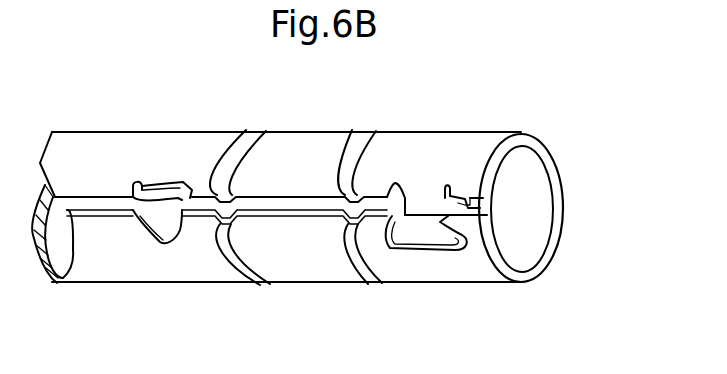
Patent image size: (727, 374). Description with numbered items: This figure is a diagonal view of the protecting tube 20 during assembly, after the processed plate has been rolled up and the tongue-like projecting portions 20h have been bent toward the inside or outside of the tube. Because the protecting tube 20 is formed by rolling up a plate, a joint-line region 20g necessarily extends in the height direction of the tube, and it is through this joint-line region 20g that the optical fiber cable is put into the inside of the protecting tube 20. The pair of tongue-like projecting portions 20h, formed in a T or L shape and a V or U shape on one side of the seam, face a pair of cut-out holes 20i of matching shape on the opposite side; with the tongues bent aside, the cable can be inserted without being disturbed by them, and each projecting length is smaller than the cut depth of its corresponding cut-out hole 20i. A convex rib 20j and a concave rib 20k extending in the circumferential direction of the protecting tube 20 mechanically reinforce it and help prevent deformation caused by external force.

The protecting tube 20 is at (470, 153).
The joint-line region 20g is at (297, 201).
The tongue-like projecting portion 20h is at (153, 193).
The cut-out hole 20i is at (166, 232).
The convex rib 20j is at (263, 287).
The concave rib 20k is at (382, 280).